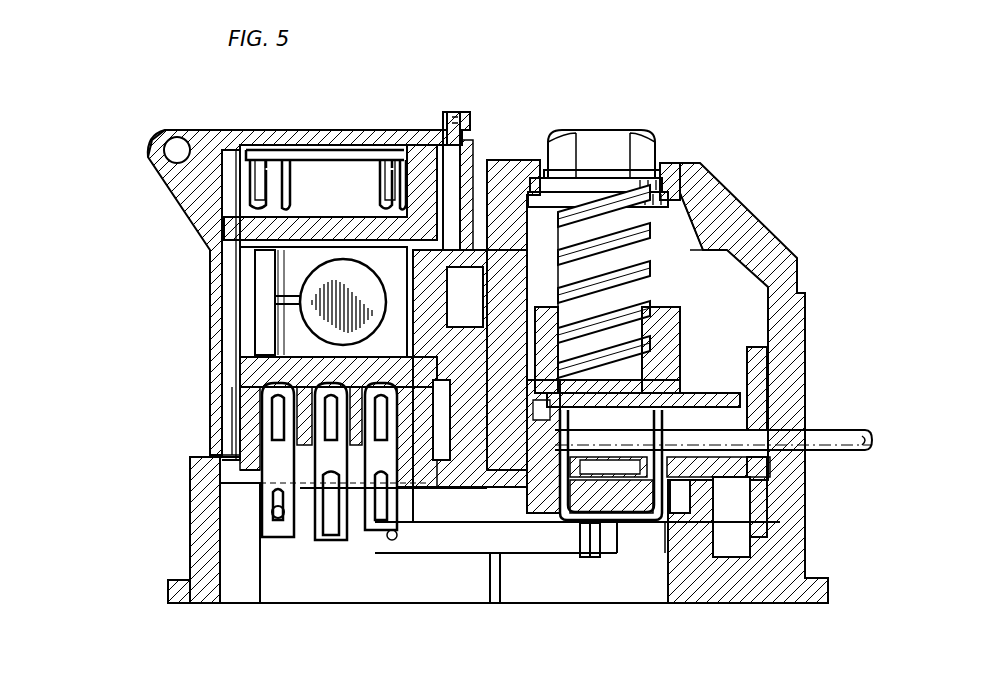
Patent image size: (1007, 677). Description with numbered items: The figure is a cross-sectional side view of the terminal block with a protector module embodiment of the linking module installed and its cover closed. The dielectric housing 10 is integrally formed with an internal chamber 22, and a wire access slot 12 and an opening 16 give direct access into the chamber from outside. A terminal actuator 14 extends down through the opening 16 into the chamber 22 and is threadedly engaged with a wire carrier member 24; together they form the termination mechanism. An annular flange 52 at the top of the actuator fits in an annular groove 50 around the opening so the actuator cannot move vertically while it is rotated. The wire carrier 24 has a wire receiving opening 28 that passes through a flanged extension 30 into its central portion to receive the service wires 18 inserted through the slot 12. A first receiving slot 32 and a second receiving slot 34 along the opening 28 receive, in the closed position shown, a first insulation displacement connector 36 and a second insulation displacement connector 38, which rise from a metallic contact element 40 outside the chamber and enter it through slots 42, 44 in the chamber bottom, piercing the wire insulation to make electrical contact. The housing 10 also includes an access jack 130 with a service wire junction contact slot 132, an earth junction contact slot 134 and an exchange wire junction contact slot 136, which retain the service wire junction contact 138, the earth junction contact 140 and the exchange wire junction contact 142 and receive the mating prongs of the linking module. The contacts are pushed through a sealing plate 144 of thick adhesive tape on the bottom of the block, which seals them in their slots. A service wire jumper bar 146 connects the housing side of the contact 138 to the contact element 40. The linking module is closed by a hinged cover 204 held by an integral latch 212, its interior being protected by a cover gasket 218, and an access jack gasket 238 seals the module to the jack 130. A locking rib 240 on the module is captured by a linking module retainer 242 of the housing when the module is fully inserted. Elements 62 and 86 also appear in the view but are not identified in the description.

The housing 10 is at (734, 118).
The wire access slot 12 is at (808, 402).
The terminal actuator 14 is at (605, 148).
The opening 16 is at (662, 170).
The service wires 18 is at (845, 452).
The internal chamber 22 is at (735, 268).
The wire carrier member 24 is at (655, 322).
The wire receiving opening 28 is at (790, 440).
The flanged extension 30 is at (772, 370).
The first receiving slot 32 is at (740, 378).
The second receiving slot 34 is at (500, 490).
The first insulation displacement connector 36 is at (665, 512).
The second insulation displacement connector 38 is at (543, 497).
The contact element 40 is at (590, 535).
The slot 42 is at (660, 520).
The slot 44 is at (556, 530).
The annular groove 50 is at (690, 212).
The annular flange 52 is at (592, 200).
The terminal block base 62 is at (268, 520).
The center terminal pin 86 is at (332, 540).
The access jack 130 is at (238, 445).
The service wire junction contact slot 132 is at (445, 538).
The earth junction contact slot 134 is at (275, 390).
The exchange wire junction contact slot 136 is at (236, 440).
The service wire junction contact 138 is at (370, 545).
The earth junction contact 140 is at (320, 540).
The exchange wire junction contact 142 is at (272, 500).
The sealing plate 144 is at (220, 483).
The service wire jumper bar 146 is at (470, 540).
The hinged cover 204 is at (252, 130).
The latch 212 is at (462, 112).
The cover gasket 218 is at (216, 262).
The access jack gasket 238 is at (205, 470).
The locking rib 240 is at (482, 257).
The linking module retainer 242 is at (520, 205).